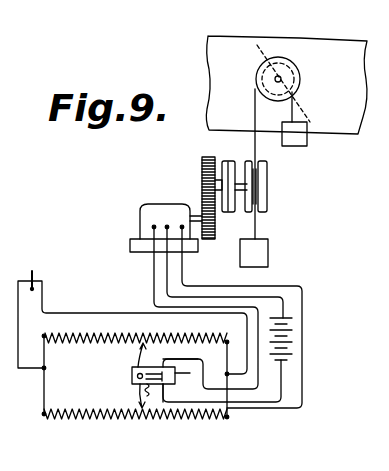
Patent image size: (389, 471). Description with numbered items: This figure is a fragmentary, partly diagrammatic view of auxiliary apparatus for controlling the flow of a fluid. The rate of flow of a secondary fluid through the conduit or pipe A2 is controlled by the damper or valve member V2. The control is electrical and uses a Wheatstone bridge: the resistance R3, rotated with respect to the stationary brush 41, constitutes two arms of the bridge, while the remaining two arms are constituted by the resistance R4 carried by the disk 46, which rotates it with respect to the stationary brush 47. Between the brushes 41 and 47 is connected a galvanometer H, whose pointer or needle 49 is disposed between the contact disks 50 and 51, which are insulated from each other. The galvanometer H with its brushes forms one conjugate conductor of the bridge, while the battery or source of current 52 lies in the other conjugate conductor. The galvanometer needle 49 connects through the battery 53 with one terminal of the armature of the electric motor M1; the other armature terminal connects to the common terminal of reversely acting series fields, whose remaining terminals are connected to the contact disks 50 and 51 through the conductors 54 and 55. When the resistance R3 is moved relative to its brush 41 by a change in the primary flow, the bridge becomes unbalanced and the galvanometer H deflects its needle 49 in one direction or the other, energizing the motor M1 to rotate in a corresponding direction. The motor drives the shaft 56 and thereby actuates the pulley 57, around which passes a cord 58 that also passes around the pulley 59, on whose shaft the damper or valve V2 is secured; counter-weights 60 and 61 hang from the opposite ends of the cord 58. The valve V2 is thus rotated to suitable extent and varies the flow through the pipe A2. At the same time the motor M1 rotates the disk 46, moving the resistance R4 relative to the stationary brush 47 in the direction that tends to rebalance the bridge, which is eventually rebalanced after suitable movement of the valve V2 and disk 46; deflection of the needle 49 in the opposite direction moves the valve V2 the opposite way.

The conduit or pipe A2 is at (317, 46).
The damper or valve member V2 is at (257, 46).
The pulley 59 is at (300, 76).
The cord 58 is at (255, 107).
The counter-weight 61 is at (307, 143).
The shaft 56 is at (292, 113).
The pulley 57 is at (270, 188).
The disk 46 is at (268, 199).
The stationary brush 47 is at (235, 162).
The resistance R4 is at (107, 417).
The resistance R3 is at (97, 343).
The electric motor M1 is at (152, 210).
The counter-weight 60 is at (268, 258).
The conductor 55 is at (154, 273).
The conductor 54 is at (182, 269).
The battery or source of current 53 is at (292, 331).
The battery or source of current 52 is at (40, 265).
The galvanometer H is at (132, 375).
The stationary brush 41 is at (144, 353).
The pointer or needle 49 is at (175, 374).
The contact disk 50 is at (166, 392).
The contact disk 51 is at (185, 361).